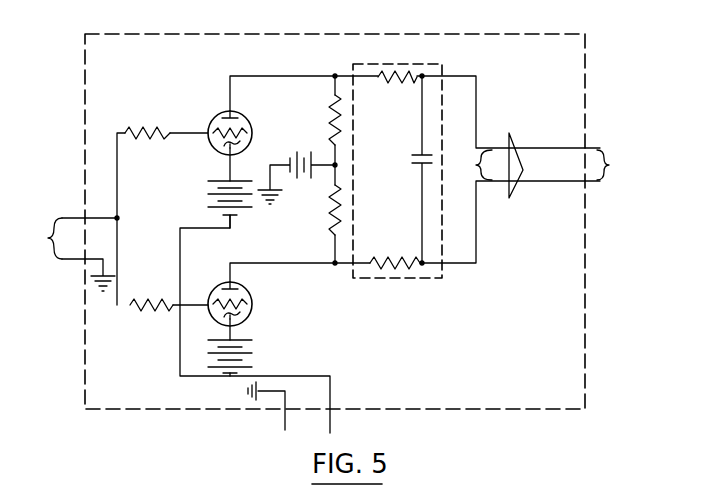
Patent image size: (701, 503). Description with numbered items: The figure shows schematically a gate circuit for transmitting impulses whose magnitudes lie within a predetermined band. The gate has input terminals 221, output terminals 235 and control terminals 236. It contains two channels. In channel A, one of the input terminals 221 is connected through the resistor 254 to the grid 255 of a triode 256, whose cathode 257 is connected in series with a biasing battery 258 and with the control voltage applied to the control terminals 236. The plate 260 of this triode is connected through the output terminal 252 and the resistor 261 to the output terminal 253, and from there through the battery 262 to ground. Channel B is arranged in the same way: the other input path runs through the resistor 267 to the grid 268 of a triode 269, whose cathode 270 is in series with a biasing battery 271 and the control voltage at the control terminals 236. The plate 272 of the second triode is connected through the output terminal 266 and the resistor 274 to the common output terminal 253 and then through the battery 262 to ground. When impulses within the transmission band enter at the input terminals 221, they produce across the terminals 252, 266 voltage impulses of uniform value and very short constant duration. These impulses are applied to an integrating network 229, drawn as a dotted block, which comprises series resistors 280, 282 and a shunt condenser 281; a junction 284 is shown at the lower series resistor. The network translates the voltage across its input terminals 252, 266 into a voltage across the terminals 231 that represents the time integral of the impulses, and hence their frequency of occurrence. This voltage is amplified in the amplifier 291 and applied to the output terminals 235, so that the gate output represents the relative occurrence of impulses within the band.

The input terminals 221 is at (72, 254).
The resistor 254 is at (166, 127).
The triode 256 is at (222, 112).
The plate 260 is at (238, 118).
The grid 255 is at (212, 147).
The cathode 257 is at (241, 142).
The biasing battery 258 is at (212, 196).
The output terminal 252 is at (335, 75).
The resistor 261 is at (340, 120).
The output terminal 253 is at (338, 165).
The battery 262 is at (302, 150).
The resistor 274 is at (333, 229).
The output terminal 266 is at (335, 267).
The series resistor 280 is at (423, 75).
The integrating network 229 is at (386, 70).
The shunt condenser 281 is at (420, 160).
The series resistor 282 is at (383, 268).
The junction point 284 is at (424, 268).
The output terminals 231 is at (469, 165).
The amplifier 291 is at (514, 162).
The output terminals 235 is at (620, 165).
The resistor 267 is at (130, 305).
The triode 269 is at (222, 286).
The plate 272 is at (238, 289).
The grid 268 is at (216, 317).
The cathode 270 is at (246, 316).
The biasing battery 271 is at (244, 350).
The control terminals 236 is at (285, 422).